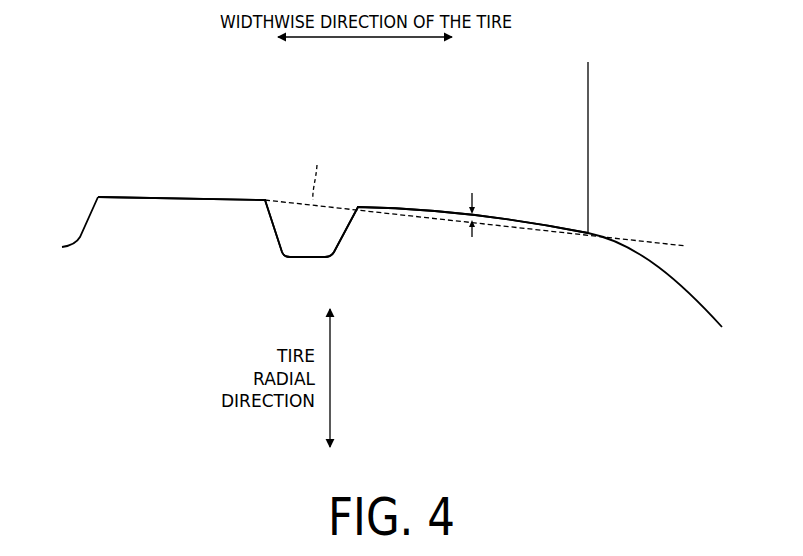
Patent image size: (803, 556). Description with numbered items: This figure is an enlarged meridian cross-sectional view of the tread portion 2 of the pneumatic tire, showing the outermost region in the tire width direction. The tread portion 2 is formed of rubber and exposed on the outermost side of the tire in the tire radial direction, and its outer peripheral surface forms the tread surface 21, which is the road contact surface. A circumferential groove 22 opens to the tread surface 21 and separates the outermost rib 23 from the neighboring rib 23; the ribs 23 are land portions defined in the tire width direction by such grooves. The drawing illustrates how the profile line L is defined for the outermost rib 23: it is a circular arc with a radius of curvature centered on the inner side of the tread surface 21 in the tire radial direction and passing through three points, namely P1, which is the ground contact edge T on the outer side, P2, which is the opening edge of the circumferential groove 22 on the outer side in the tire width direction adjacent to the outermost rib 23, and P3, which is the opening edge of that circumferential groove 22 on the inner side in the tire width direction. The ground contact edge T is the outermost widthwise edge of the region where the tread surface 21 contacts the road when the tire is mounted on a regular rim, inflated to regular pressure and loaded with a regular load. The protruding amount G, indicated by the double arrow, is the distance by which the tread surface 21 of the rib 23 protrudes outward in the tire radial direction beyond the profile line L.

The tread portion 2 is at (96, 194).
The tread surface 21 is at (119, 189).
The circumferential groove 22 is at (272, 218).
The rib 23 is at (160, 213).
The ground contact edge point P1 is at (587, 233).
The outer opening edge of circumferential groove P2 is at (358, 207).
The inner opening edge of circumferential groove P3 is at (265, 200).
The profile line L is at (313, 177).
The protruding amount G is at (477, 215).
The ground contact edge T is at (590, 233).